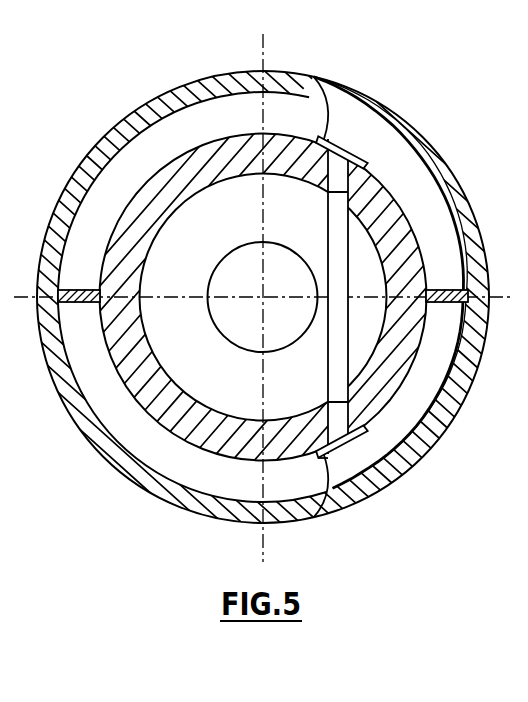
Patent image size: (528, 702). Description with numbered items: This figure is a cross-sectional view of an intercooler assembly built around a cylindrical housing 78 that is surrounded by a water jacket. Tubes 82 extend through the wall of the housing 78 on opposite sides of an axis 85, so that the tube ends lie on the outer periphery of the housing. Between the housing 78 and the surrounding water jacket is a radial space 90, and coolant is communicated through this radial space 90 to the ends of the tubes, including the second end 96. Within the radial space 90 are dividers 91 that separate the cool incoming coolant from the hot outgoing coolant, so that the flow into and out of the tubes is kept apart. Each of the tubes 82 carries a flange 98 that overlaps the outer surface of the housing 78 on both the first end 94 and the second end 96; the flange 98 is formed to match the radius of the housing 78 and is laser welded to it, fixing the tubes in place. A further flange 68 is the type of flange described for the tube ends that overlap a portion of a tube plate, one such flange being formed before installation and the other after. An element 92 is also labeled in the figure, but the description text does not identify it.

The radial space 90 is at (115, 186).
The flange 98 is at (314, 76).
The flange 68 is at (376, 104).
The first end 94 is at (372, 143).
The cylindrical housing 78 is at (366, 207).
The tubes 82 is at (348, 267).
The axis 85 is at (362, 286).
The dividers 91 is at (71, 302).
The second end 96 is at (380, 449).
The lower foot 92 is at (350, 452).